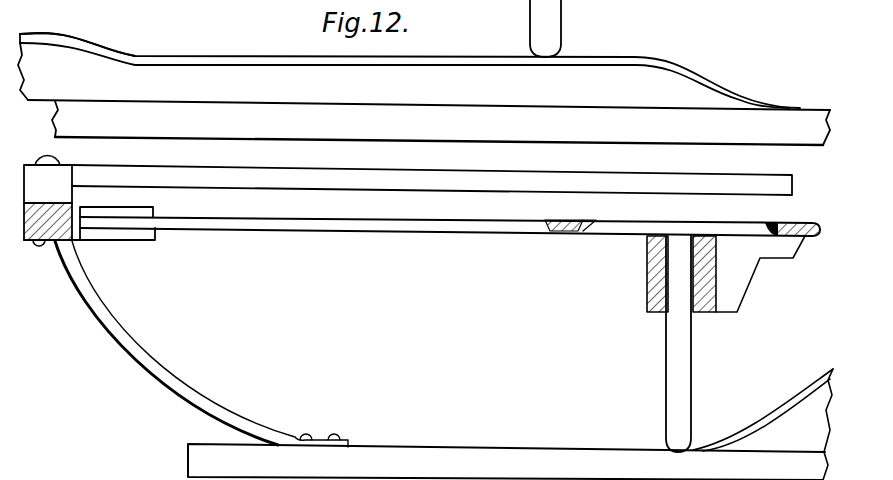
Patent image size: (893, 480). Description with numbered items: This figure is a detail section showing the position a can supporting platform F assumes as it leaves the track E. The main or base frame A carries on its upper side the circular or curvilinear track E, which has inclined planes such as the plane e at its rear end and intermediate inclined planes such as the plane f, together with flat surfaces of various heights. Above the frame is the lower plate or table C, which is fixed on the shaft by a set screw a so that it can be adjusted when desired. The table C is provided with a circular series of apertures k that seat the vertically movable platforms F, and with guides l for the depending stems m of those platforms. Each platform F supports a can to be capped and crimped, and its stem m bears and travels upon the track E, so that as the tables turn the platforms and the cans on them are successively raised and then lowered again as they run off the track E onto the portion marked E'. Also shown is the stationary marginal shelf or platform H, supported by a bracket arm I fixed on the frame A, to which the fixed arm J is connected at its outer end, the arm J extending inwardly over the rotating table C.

The intermediate inclined plane f is at (88, 46).
The track E is at (424, 71).
The set screw a is at (707, 88).
The main or base frame A is at (441, 123).
The fixed arm J is at (432, 189).
The marginal shelf or platform H is at (137, 232).
The lower plate or table C is at (433, 228).
The circular aperture k is at (585, 219).
The vertically movable platform F is at (598, 236).
The guide l is at (648, 265).
The depending stem m is at (676, 332).
The bracket arm I is at (125, 338).
The inclined plane e is at (765, 410).
The lower plate E' is at (803, 424).